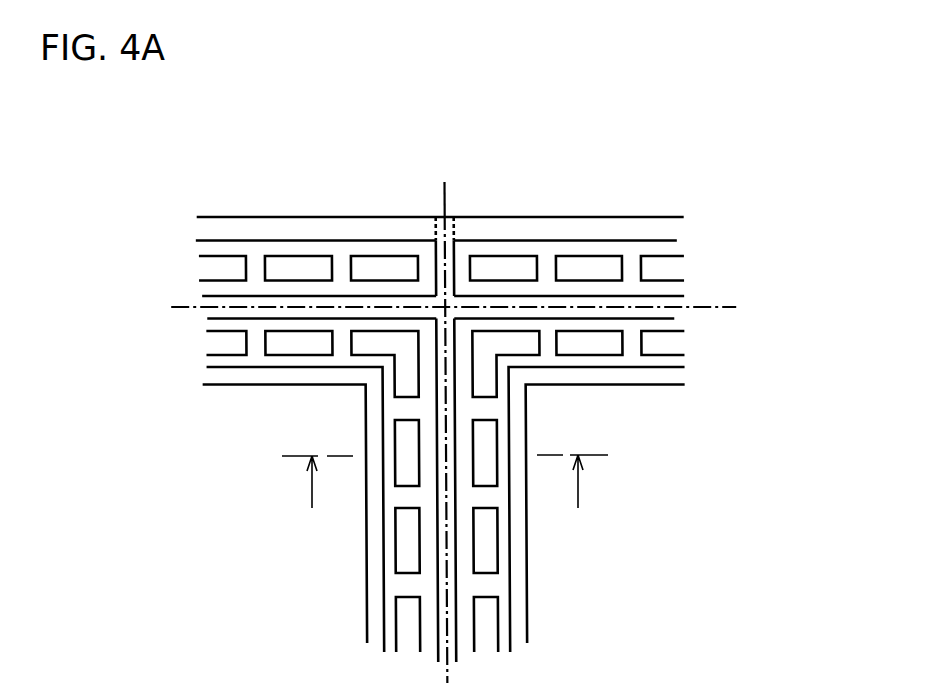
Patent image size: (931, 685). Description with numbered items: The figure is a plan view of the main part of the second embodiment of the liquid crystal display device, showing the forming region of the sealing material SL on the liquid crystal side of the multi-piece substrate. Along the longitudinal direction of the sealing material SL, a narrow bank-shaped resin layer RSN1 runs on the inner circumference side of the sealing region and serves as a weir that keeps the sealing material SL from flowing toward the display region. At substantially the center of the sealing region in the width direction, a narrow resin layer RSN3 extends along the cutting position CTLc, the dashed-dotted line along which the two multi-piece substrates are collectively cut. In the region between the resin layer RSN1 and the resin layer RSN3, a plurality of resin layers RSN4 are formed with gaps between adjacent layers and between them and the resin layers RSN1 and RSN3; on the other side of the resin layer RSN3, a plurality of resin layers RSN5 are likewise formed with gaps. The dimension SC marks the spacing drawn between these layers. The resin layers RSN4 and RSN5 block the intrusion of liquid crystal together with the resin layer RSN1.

The sealing material SL is at (167, 242).
The resin layer RSN1 is at (372, 584).
The resin layer RSN3 is at (397, 293).
The resin layers RSN4 is at (403, 455).
The resin layers RSN5 is at (295, 263).
The cutting position CTLc is at (447, 195).
The spacing dimension SC is at (445, 502).